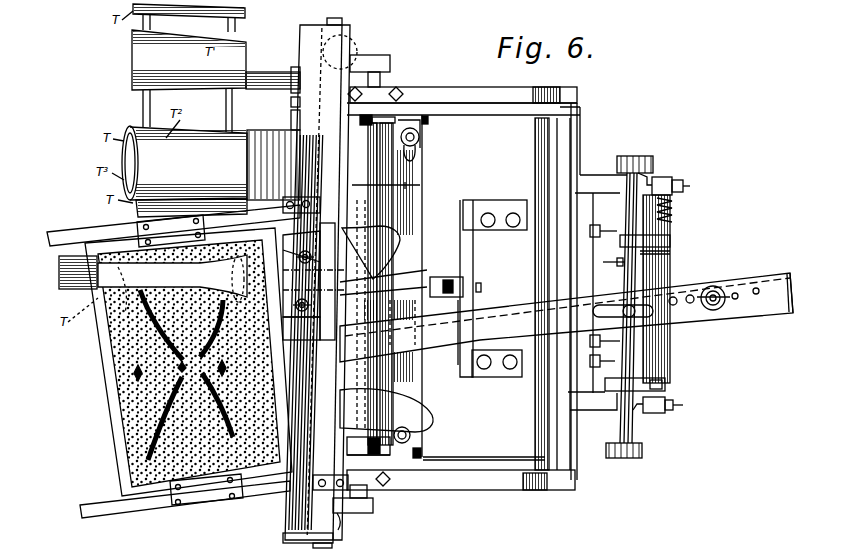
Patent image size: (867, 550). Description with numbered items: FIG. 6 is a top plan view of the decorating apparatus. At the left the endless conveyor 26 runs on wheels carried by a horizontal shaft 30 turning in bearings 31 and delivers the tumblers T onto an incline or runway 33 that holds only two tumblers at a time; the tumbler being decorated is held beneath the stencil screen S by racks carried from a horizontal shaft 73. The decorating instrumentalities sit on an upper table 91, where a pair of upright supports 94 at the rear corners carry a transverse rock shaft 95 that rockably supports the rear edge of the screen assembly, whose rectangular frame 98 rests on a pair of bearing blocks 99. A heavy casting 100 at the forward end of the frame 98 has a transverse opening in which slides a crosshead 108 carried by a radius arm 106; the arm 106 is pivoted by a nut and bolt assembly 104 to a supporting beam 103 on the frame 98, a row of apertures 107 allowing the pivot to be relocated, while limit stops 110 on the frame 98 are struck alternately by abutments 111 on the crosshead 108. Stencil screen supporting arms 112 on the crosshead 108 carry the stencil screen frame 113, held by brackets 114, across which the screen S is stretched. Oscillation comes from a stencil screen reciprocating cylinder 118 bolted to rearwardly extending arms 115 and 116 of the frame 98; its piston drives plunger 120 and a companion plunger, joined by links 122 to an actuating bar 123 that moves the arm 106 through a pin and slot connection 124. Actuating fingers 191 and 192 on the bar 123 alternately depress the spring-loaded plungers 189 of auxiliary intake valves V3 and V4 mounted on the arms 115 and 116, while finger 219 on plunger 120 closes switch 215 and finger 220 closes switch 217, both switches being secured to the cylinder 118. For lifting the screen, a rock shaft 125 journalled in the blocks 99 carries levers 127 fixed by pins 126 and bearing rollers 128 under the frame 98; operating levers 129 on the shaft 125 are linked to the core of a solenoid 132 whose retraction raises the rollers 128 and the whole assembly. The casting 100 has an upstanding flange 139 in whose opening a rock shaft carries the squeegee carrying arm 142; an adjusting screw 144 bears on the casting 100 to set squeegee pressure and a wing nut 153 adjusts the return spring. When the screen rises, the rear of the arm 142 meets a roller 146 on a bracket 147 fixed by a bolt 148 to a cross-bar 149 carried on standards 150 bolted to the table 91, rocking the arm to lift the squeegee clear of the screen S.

The endless conveyor 26 is at (238, 24).
The horizontal shaft 30 is at (266, 80).
The bearings 31 is at (291, 100).
The incline or runway 33 is at (242, 133).
The stencil screen supporting arms 112 is at (60, 232).
The brackets 114 is at (198, 512).
The stencil screen frame 113 is at (113, 418).
The stencil screen S is at (113, 346).
The horizontal shaft 73 is at (58, 277).
The squeegee carrying arm 142 is at (97, 300).
The casting 100 is at (285, 533).
The crosshead 108 is at (298, 221).
The wing nut 153 is at (298, 257).
The adjusting screw 144 is at (296, 304).
The actuating solenoid 132 is at (339, 525).
The operating lever 129 is at (375, 65).
The bearing blocks 99 is at (383, 93).
The upper table 91 is at (508, 98).
The frame 98 is at (480, 472).
The upright supports 94 is at (560, 98).
The rock shaft 95 is at (533, 430).
The rock shaft 125 is at (410, 188).
The upstanding flange 139 is at (379, 284).
The pins 126 is at (372, 127).
The levers 127 is at (380, 128).
The adjustable limit stops 110 is at (420, 143).
The rollers 128 is at (430, 118).
The abutments 111 is at (393, 243).
The roller 146 is at (436, 280).
The bracket 147 is at (467, 275).
The bolt 148 is at (481, 288).
The cross-bar 149 is at (465, 332).
The standards 150 is at (500, 207).
The radius arm 106 is at (675, 290).
The pin and slot connection 124 is at (624, 306).
The nut and bolt assembly 104 is at (717, 311).
The apertures 107 is at (755, 287).
The supporting beam 103 is at (776, 315).
The cylinder supporting arm 116 is at (588, 183).
The cylinder supporting arm 115 is at (590, 410).
The plunger 120 is at (637, 436).
The links 122 is at (645, 160).
The stencil screen reciprocating cylinder 118 is at (670, 337).
The plungers 189 is at (673, 213).
The actuating bar 123 is at (672, 234).
The actuating finger 192 is at (672, 251).
The actuating finger 191 is at (668, 376).
The switch 217 is at (600, 233).
The actuating finger 220 is at (611, 255).
The actuating finger 219 is at (600, 350).
The switch 215 is at (602, 362).
The auxiliary intake valve V4 is at (665, 182).
The auxiliary intake valve V3 is at (665, 414).